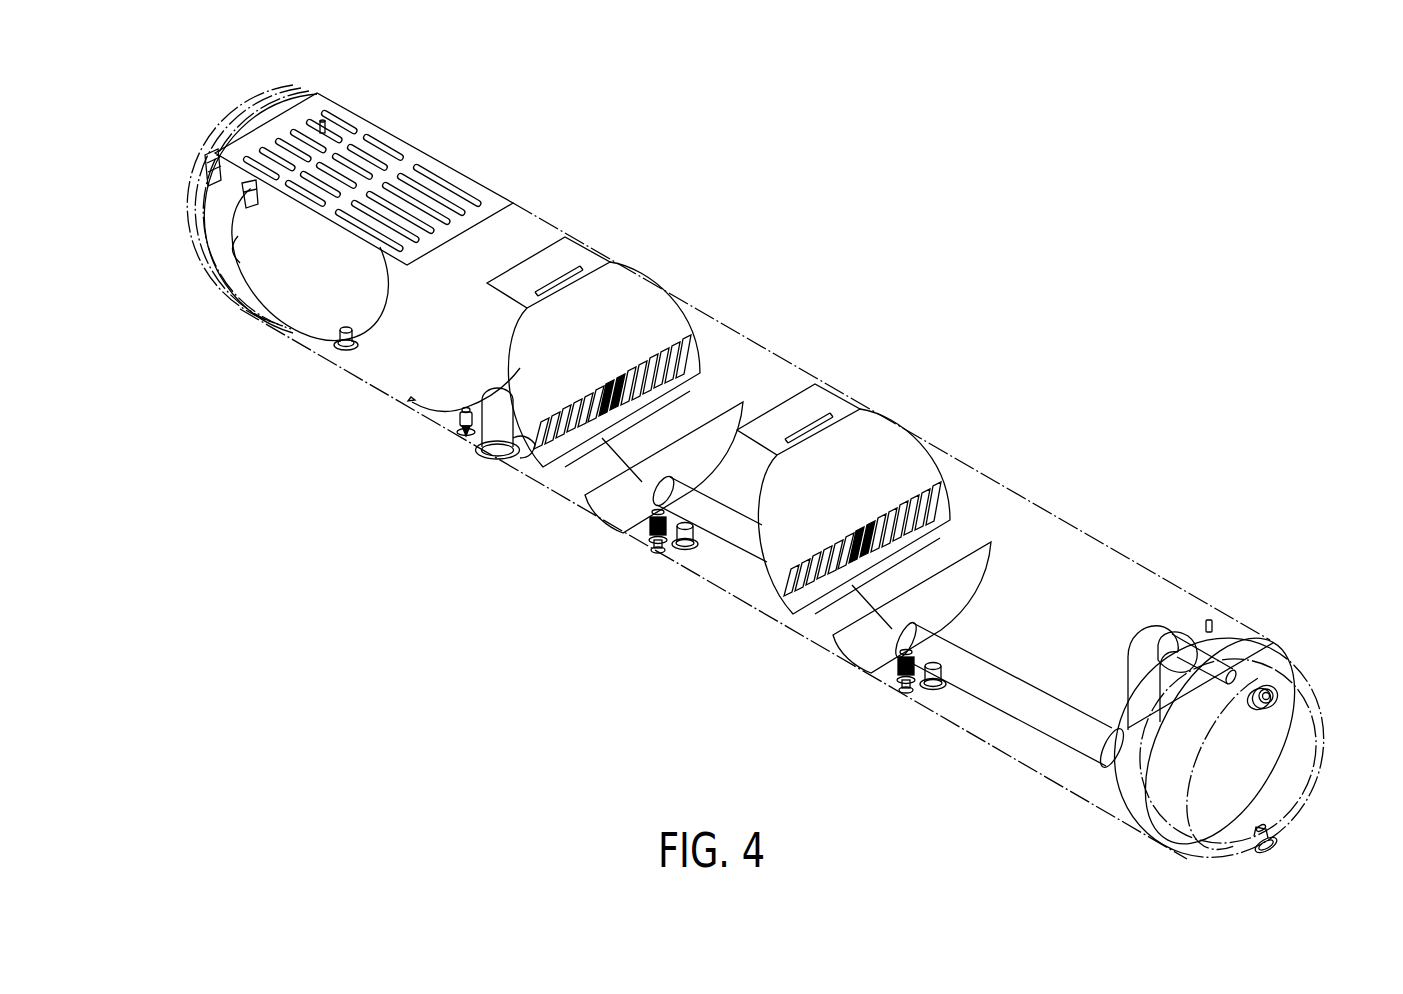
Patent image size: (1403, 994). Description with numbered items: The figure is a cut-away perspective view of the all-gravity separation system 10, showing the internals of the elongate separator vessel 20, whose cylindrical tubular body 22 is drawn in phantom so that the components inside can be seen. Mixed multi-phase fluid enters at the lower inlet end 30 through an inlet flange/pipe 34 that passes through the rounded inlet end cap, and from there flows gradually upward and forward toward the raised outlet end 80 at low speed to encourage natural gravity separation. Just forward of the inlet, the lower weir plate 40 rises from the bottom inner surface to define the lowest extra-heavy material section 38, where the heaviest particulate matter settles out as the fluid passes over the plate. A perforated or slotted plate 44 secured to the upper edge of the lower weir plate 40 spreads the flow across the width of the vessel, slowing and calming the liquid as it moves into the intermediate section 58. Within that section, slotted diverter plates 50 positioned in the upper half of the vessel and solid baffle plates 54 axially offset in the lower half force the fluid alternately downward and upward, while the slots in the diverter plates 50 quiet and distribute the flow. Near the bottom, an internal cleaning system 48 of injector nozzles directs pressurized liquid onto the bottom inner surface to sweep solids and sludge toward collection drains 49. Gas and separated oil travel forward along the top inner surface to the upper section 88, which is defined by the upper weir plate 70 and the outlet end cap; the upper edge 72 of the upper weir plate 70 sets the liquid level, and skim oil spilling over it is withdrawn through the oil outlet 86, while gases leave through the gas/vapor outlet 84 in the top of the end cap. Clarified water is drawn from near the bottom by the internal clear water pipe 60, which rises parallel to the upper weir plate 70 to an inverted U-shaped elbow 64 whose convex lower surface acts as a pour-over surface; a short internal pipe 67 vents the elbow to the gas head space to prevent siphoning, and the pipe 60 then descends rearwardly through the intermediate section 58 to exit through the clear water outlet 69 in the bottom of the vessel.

The separation system 10 is at (957, 248).
The separator vessel 20 is at (1080, 487).
The tubular body 22 is at (693, 305).
The lower inlet end 30 is at (236, 97).
The inlet flange/pipe 34 is at (215, 170).
The lower section 38 is at (200, 243).
The lower weir plate 40 is at (260, 300).
The perforated or slotted plate 44 is at (353, 170).
The internal cleaning system 48 is at (440, 415).
The collection drains 49 is at (338, 350).
The slotted diverter plates 50 is at (615, 283).
The solid baffle plates 54 is at (605, 500).
The intermediate section 58 is at (755, 368).
The internal clear water pipe 60 is at (995, 668).
The inverted U-shaped elbow 64 is at (1162, 617).
The short internal pipe 67 is at (1205, 650).
The clear water outlet 69 is at (500, 460).
The upper weir plate 70 is at (1128, 792).
The upper edge 72 is at (1147, 705).
The raised outlet end 80 is at (1340, 710).
The gas/vapor outlet 84 is at (1268, 700).
The oil outlet 86 is at (1277, 850).
The upper section 88 is at (1275, 775).